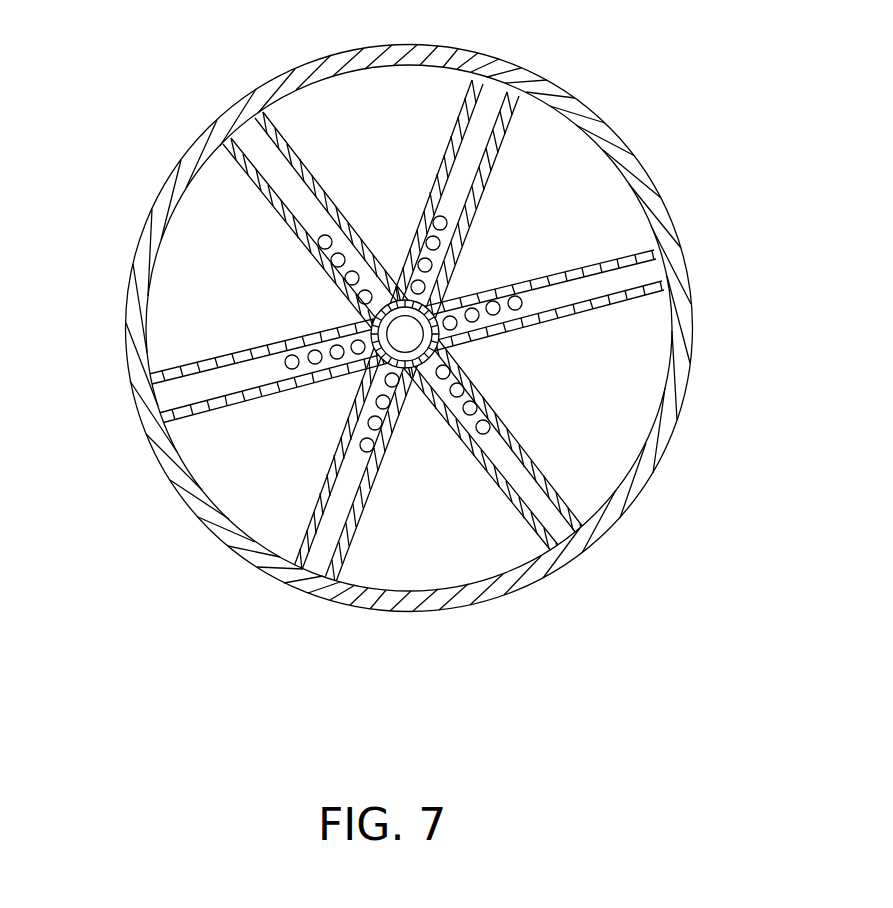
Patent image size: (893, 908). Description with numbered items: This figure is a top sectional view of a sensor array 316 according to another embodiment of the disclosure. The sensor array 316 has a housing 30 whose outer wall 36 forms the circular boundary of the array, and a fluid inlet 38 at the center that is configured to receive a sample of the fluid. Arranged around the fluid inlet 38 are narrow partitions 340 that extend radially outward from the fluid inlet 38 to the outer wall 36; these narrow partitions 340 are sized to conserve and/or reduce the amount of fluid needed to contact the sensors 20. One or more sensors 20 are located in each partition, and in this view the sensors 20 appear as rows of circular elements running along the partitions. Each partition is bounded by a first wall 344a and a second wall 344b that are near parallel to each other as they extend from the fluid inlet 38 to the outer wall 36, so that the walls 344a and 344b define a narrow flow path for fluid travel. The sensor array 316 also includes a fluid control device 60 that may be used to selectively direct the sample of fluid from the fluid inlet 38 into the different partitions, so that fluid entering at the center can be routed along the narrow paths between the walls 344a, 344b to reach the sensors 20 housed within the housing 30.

The sensor array 316 is at (399, 307).
The housing 30 is at (376, 307).
The outer wall 36 is at (455, 48).
The narrow partitions 340 is at (452, 338).
The first wall 344a is at (276, 215).
The second wall 344b is at (318, 190).
The sensors 20 is at (345, 292).
The fluid control device 60 is at (540, 289).
The fluid inlet 38 is at (412, 338).